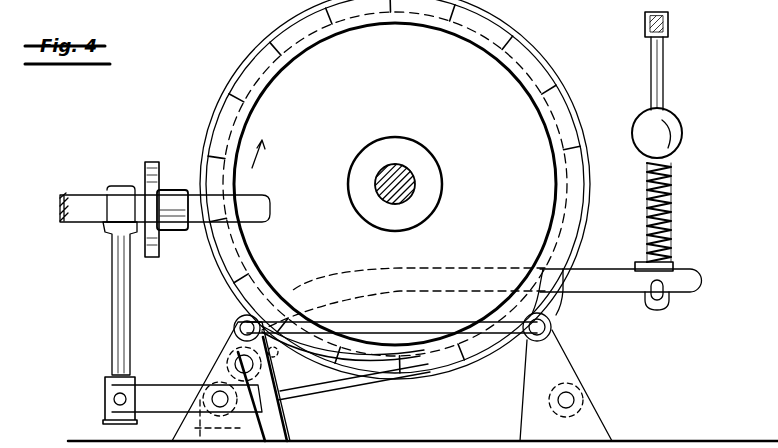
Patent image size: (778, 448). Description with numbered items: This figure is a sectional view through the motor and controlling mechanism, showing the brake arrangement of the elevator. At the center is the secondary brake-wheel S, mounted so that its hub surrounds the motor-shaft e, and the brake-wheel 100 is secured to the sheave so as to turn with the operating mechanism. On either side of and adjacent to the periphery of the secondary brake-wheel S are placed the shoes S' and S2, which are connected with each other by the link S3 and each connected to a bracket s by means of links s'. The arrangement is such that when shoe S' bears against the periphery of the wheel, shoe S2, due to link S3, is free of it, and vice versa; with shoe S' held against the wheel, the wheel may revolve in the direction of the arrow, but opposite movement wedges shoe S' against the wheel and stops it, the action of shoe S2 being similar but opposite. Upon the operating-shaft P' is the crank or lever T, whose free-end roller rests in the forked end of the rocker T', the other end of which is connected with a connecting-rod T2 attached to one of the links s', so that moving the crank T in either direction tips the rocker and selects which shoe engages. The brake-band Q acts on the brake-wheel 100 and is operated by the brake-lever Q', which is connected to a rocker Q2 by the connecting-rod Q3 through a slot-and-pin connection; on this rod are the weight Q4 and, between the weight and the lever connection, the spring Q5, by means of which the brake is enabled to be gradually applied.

The brake-wheel 100 is at (532, 46).
The secondary brake-wheel S is at (297, 77).
The motor-shaft e is at (408, 180).
The operating-shaft P' is at (175, 195).
The crank or lever T is at (172, 196).
The rocker T' is at (140, 197).
The connecting-rod T2 is at (130, 296).
The bracket s is at (381, 381).
The links s' is at (401, 351).
The link S3 is at (428, 312).
The brake-shoe S2 is at (551, 300).
The brake-shoe S' is at (343, 347).
The brake-band Q is at (446, 299).
The brake-lever Q' is at (482, 283).
The rocker Q2 is at (668, 18).
The connecting-rod Q3 is at (652, 68).
The weight Q4 is at (680, 134).
The spring Q5 is at (672, 186).